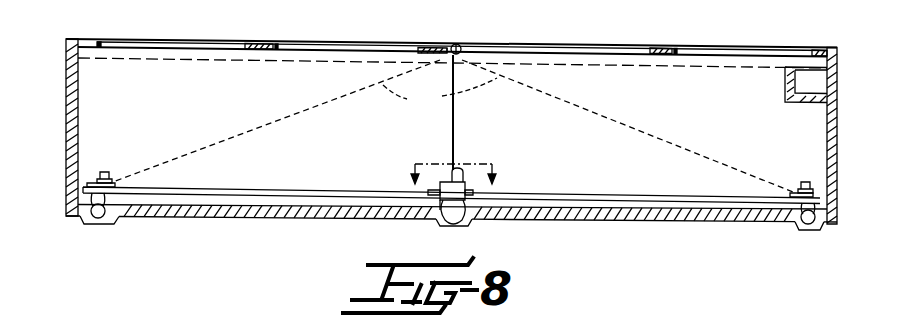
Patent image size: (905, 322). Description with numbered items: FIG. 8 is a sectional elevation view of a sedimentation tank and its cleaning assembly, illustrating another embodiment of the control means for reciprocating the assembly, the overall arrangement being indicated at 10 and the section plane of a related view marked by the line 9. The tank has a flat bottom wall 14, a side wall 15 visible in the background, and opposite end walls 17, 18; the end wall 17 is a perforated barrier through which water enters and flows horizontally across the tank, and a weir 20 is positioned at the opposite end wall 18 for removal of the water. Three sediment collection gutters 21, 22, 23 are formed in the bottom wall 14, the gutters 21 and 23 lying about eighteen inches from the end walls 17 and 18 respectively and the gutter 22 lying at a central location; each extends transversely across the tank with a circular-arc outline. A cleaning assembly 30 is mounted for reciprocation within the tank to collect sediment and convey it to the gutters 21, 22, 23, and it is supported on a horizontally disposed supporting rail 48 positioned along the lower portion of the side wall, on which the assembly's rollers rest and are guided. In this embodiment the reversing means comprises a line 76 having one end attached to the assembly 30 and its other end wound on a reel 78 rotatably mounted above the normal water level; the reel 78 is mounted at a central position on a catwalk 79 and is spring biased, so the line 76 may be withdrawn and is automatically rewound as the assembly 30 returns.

The section line 9- 9 is at (450, 160).
The drying rack frame assembly 10 is at (470, 39).
The bottom wall 14 is at (316, 188).
The side wall 15 is at (223, 98).
The end wall 17 is at (74, 133).
The end wall 18 is at (832, 147).
The weir 20 is at (785, 80).
The sediment collection gutter 21 is at (100, 223).
The sediment collection gutter 22 is at (453, 226).
The sediment collection gutter 23 is at (806, 231).
The cleaning assembly 30 is at (433, 218).
The supporting rail 48 is at (604, 193).
The line 76 is at (452, 96).
The reel 78 is at (457, 44).
The catwalk 79 is at (447, 47).